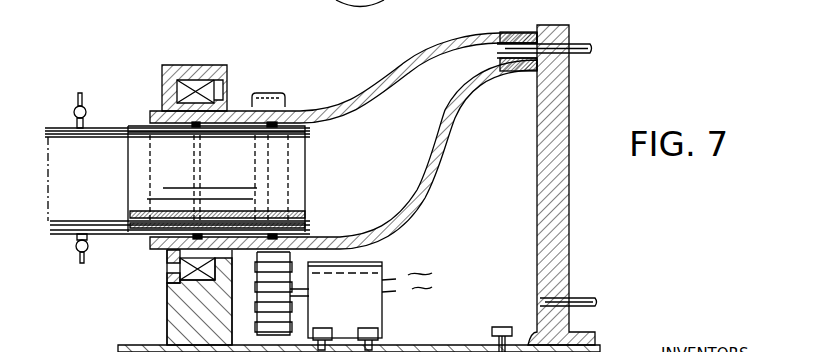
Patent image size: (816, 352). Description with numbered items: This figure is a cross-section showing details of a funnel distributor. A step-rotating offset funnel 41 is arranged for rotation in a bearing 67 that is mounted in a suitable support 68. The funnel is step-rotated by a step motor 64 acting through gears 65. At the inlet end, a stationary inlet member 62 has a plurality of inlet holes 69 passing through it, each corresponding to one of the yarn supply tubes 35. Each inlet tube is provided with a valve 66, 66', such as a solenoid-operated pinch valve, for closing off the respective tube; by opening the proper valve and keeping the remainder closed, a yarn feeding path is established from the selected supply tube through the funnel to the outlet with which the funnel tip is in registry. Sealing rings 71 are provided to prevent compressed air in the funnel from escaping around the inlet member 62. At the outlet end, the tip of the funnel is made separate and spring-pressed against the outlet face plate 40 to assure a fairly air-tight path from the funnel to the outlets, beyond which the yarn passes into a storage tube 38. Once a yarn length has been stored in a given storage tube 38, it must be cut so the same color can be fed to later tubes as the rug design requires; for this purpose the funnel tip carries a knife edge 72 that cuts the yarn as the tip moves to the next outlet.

The yarn supply tube 35 is at (100, 138).
The storage tube 38 is at (570, 0).
The outlet face plate 40 is at (554, 122).
The step-rotating offset funnel 41 is at (387, 77).
The inlet member 62 is at (137, 150).
The step motor 64 is at (365, 273).
The gears 65 is at (290, 314).
The valve 66 is at (60, 107).
The valve 66' is at (61, 255).
The bearing 67 is at (180, 268).
The support 68 is at (185, 318).
The inlet hole 69 is at (306, 224).
The sealing ring 71 is at (163, 113).
The knife edge 72 is at (500, 33).